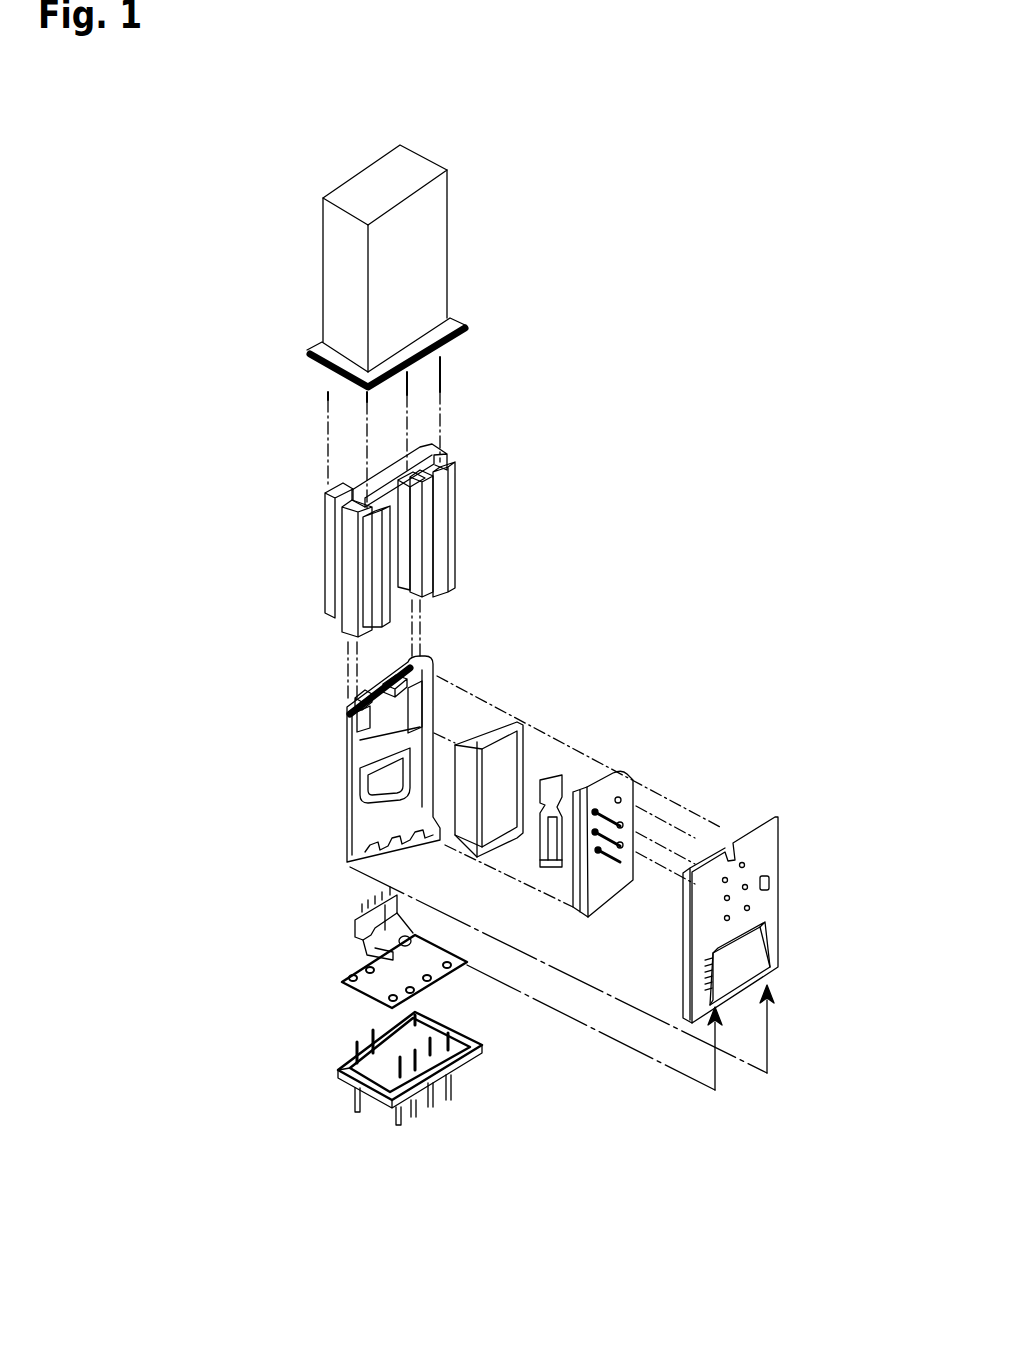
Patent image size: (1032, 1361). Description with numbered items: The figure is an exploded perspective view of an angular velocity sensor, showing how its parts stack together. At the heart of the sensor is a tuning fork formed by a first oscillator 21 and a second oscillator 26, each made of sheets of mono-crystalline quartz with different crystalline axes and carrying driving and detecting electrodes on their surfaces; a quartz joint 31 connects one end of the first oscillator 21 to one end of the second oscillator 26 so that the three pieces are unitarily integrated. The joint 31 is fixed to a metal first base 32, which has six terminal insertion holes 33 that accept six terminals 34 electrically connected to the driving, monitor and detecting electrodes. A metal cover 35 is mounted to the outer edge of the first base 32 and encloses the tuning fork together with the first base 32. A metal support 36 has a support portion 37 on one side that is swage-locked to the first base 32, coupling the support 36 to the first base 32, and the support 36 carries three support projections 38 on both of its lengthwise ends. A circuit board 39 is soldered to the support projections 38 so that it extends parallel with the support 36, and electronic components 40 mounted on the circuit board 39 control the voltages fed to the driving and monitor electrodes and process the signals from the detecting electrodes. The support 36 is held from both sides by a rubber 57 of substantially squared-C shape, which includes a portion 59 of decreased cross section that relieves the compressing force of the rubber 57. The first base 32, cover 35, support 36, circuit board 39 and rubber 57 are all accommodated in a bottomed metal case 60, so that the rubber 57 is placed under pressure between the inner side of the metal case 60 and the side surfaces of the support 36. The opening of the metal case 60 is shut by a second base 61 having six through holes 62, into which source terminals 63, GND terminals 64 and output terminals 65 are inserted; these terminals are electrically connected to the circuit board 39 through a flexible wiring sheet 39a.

The metal case 60 is at (335, 233).
The portion having a decreased cross section 59 is at (442, 470).
The rubber 57 is at (445, 537).
The support projections 38 is at (405, 672).
The support 36 is at (297, 796).
The support portion 37 is at (415, 800).
The cover 35 is at (500, 718).
The joint 31 is at (556, 773).
The terminal insertion holes 33 is at (689, 793).
The first base 32 is at (636, 800).
The terminals 34 is at (636, 810).
The circuit board 39 is at (796, 910).
The electronic components 40 is at (760, 943).
The flexible wiring sheet 39a is at (352, 990).
The second base 61 is at (327, 1127).
The through holes 62 is at (358, 1108).
The source terminals 63 is at (399, 1127).
The GND terminals 64 is at (345, 1075).
The output terminals 65 is at (448, 1080).
The first oscillator 21 is at (545, 867).
The second oscillator 26 is at (561, 867).